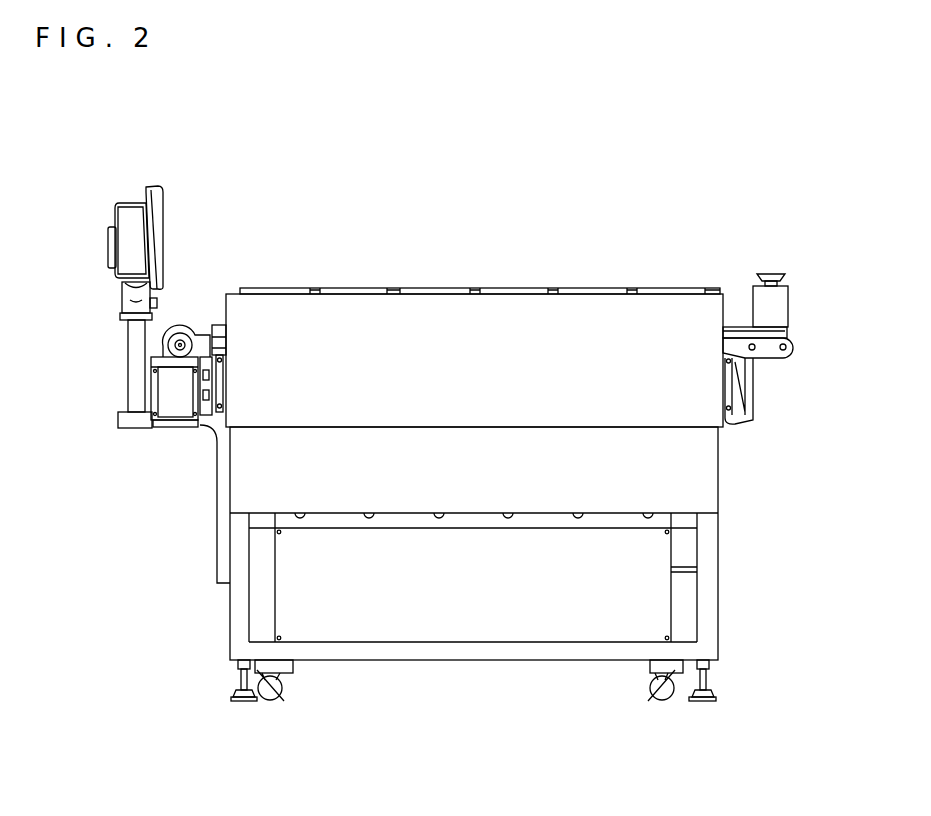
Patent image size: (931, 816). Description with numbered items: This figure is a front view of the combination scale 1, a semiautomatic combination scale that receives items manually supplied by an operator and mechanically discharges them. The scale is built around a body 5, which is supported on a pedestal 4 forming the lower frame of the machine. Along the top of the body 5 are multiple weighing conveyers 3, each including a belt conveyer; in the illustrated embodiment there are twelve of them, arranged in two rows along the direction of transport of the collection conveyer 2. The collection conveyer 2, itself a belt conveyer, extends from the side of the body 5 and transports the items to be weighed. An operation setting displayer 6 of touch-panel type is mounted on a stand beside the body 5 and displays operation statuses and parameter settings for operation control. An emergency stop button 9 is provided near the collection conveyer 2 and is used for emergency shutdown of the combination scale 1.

The combination scale 1 is at (780, 197).
The collection conveyer 2 is at (765, 337).
The weighing conveyer 3 is at (270, 288).
The pedestal 4 is at (718, 593).
The body 5 is at (718, 487).
The operation setting displayer 6 is at (163, 223).
The emergency stop button 9 is at (773, 270).